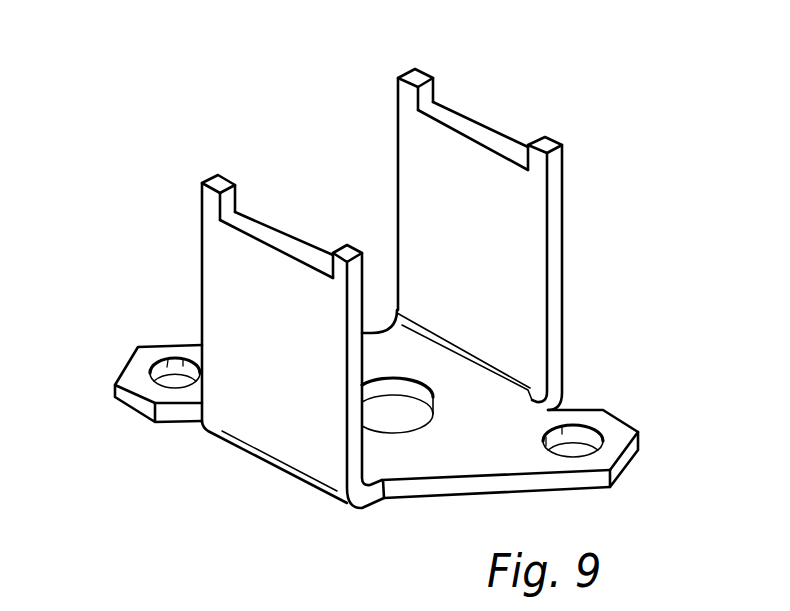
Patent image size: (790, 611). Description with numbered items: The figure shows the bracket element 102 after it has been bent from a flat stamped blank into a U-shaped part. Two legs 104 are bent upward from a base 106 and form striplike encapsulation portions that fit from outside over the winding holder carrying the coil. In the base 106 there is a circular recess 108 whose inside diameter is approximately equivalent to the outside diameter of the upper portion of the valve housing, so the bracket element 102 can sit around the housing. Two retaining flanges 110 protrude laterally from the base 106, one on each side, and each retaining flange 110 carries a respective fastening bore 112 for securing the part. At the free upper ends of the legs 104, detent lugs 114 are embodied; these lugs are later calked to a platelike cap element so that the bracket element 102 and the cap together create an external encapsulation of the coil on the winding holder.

The bracket element 102 is at (222, 485).
The legs 104 is at (295, 339).
The base 106 is at (380, 448).
The circular recess 108 is at (423, 398).
The retaining flanges 110 is at (143, 362).
The fastening bores 112 is at (188, 355).
The detent lugs 114 is at (348, 247).